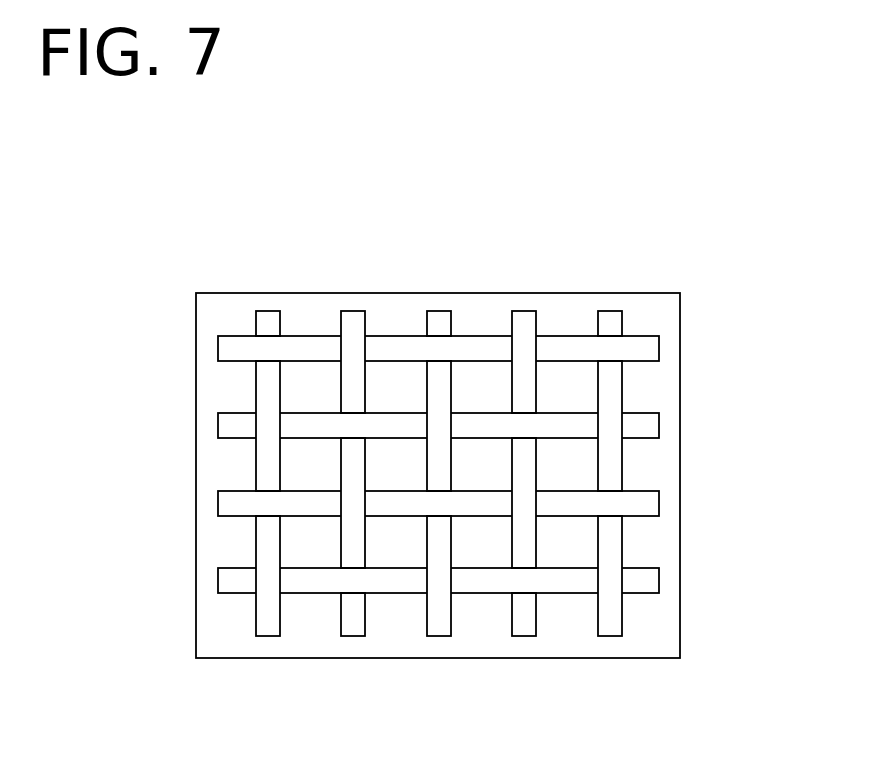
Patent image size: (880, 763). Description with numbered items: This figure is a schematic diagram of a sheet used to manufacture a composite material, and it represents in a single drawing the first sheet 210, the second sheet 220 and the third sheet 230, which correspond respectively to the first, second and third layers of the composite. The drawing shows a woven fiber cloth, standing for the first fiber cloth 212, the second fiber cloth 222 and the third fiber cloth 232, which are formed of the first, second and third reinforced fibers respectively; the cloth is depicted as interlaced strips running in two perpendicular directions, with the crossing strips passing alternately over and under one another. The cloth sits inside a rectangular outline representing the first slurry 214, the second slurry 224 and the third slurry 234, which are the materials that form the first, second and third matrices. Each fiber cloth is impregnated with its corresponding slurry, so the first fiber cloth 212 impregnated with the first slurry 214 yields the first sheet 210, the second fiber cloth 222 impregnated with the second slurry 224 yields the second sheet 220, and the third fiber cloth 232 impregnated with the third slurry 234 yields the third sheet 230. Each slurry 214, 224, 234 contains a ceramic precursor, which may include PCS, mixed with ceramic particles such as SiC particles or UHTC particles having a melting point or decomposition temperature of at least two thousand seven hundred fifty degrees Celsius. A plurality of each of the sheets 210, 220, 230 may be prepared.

The first sheet 210 is at (527, 449).
The second sheet 220 is at (527, 449).
The third sheet 230 is at (527, 449).
The first fiber cloth 212 is at (534, 435).
The second fiber cloth 222 is at (534, 435).
The third fiber cloth 232 is at (268, 312).
The first slurry 214 is at (496, 515).
The second slurry 224 is at (496, 515).
The third slurry 234 is at (658, 643).